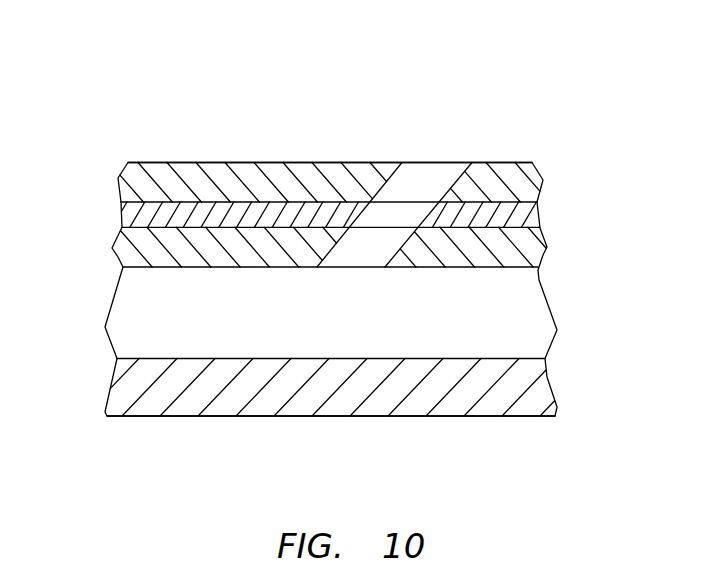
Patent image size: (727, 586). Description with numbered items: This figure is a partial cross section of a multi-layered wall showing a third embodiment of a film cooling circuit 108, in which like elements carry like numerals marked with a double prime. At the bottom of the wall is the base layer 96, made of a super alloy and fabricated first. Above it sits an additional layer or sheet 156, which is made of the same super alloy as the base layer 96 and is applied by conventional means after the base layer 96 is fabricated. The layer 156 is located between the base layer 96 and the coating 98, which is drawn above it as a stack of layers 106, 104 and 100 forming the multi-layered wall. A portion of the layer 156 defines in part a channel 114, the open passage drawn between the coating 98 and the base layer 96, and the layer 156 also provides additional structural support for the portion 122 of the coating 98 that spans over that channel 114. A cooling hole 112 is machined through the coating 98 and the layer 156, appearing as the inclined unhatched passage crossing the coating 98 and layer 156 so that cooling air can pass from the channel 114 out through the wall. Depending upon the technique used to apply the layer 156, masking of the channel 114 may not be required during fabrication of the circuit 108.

The film cooling circuit 108 is at (563, 95).
The coating 98 is at (107, 163).
The outer layer 106 is at (543, 180).
The intermediate layer 104 is at (528, 209).
The base layer 100 is at (517, 268).
The portion of the coating 122 is at (188, 228).
The cooling hole 112 is at (433, 180).
The layer 156 is at (470, 247).
The channel 114 is at (275, 332).
The base layer 96 is at (528, 373).